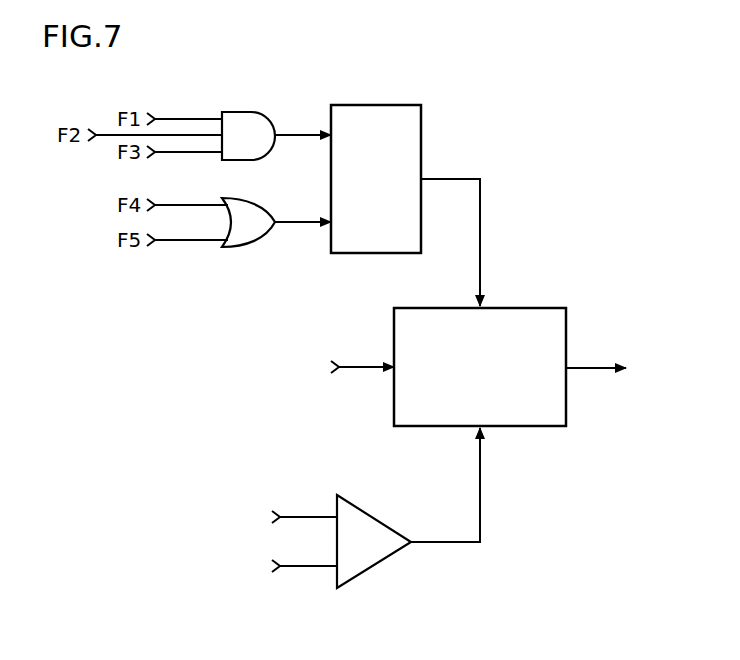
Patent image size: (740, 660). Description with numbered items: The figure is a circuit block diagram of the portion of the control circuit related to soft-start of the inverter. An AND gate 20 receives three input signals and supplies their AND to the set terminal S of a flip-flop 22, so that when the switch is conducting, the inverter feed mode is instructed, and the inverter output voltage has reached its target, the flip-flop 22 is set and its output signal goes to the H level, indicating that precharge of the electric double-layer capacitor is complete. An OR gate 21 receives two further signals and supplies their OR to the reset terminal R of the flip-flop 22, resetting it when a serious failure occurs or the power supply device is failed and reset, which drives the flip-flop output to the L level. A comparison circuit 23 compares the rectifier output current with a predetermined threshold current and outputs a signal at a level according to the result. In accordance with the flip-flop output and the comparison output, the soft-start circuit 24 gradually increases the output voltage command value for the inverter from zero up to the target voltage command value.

The AND gate 20 is at (240, 122).
The OR gate 21 is at (240, 237).
The flip-flop 22 is at (375, 113).
The comparison circuit 23 is at (373, 527).
The soft-start circuit 24 is at (548, 318).